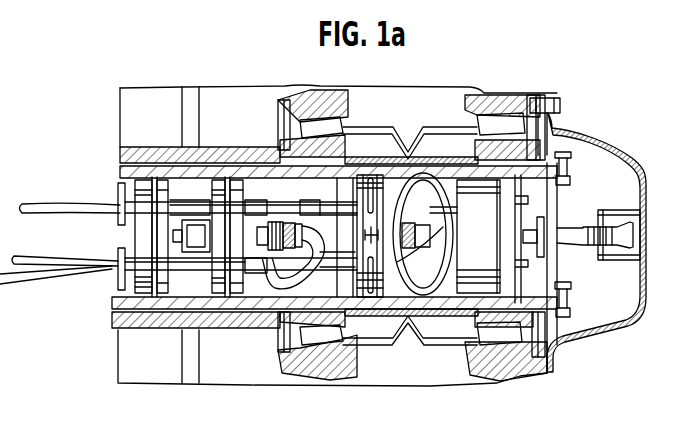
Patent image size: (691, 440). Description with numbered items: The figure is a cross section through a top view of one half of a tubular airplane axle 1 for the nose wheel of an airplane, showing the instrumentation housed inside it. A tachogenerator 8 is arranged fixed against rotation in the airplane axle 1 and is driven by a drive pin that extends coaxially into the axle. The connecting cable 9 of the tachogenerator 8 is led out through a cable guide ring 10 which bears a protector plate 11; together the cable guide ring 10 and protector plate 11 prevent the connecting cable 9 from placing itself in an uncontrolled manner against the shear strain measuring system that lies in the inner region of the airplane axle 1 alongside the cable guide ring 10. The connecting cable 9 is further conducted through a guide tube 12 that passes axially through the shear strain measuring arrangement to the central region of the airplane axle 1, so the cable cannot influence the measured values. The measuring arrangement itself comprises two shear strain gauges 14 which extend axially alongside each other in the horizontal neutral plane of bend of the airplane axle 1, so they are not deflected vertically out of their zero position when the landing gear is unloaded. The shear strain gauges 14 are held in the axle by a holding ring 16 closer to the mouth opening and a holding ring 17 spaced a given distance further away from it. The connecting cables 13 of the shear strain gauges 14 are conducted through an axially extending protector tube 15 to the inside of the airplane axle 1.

The airplane axle 1 is at (252, 305).
The tachogenerator 8 is at (480, 273).
The connecting cable 9 is at (64, 206).
The cable guide ring 10 is at (372, 297).
The protector plate 11 is at (340, 257).
The guide tube 12 is at (199, 205).
The connecting cables 13 is at (84, 272).
The shear strain gauge 14 is at (187, 245).
The protector tube 15 is at (200, 263).
The holding ring 16 is at (240, 187).
The holding ring 17 is at (139, 180).